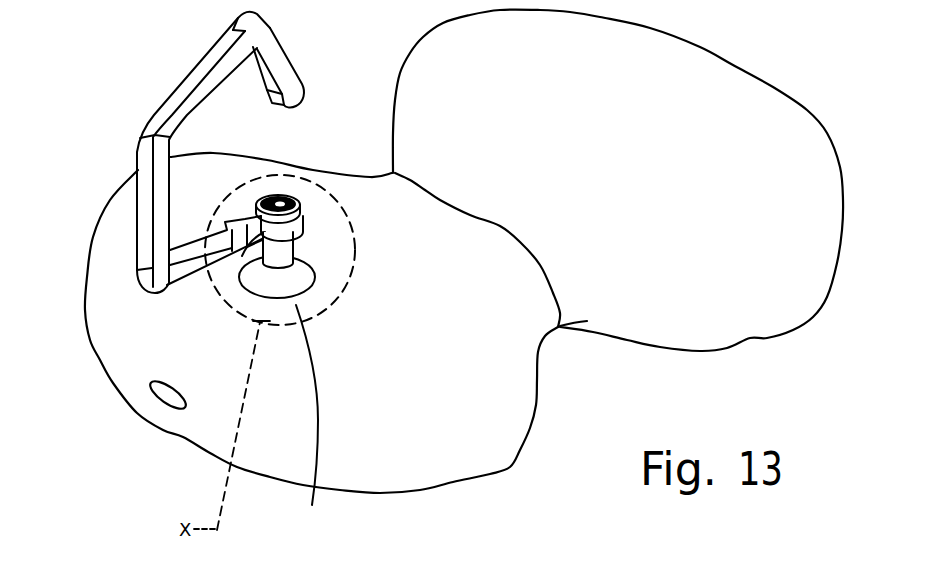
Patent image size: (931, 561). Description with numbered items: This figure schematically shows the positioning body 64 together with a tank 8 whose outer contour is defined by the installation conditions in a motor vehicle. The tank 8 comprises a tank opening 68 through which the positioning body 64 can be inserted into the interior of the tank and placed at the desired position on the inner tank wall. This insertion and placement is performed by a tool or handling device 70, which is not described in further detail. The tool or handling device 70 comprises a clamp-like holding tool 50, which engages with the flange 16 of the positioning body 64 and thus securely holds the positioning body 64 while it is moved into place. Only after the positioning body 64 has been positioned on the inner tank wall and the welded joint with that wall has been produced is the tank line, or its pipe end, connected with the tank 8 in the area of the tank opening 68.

The tank 8 is at (507, 450).
The flange 16 is at (243, 282).
The clamp-like holding tool 50 is at (247, 208).
The positioning body 64 is at (295, 245).
The tank opening 68 is at (308, 422).
The tool or handling device 70 is at (187, 88).